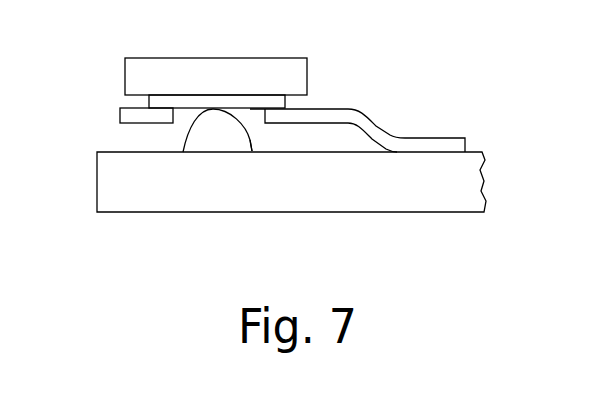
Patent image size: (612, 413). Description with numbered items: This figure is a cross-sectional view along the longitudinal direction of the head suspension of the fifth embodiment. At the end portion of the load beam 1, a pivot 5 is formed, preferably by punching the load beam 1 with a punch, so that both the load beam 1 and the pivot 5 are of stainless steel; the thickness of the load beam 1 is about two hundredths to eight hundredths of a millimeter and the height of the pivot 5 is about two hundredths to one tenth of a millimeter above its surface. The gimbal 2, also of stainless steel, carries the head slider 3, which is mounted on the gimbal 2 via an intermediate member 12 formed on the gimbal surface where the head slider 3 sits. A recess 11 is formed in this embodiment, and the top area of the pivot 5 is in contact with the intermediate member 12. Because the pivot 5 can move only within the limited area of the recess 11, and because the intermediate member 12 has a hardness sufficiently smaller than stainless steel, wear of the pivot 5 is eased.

The load beam 1 is at (442, 198).
The gimbal 2 is at (372, 128).
The head slider 3 is at (270, 67).
The pivot 5 is at (218, 141).
The recess 11 is at (250, 110).
The intermediate member 12 is at (148, 100).